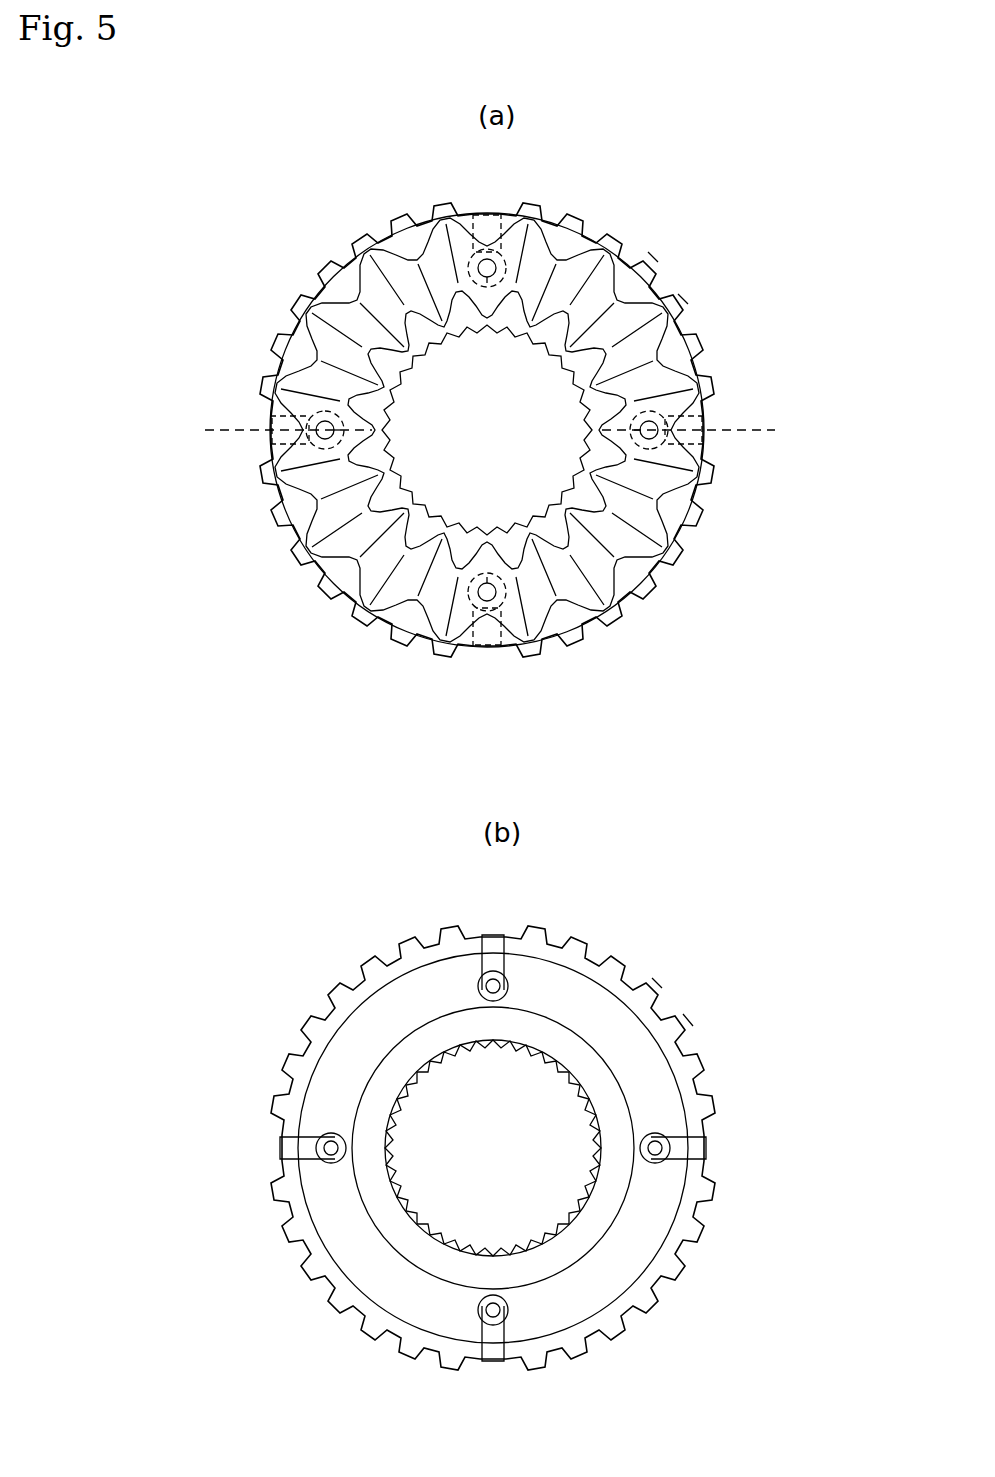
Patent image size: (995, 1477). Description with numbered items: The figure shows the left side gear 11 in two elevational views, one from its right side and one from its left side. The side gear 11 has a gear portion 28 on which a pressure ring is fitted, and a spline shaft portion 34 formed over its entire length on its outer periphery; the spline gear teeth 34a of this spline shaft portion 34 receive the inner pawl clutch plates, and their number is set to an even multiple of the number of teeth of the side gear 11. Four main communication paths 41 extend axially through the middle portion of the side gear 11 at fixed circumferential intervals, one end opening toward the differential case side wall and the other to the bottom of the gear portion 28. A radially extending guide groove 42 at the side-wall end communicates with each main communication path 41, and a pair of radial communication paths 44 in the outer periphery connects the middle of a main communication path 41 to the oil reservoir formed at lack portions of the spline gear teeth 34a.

In FIG. 5A, the side gear 11 is at (272, 236).
In FIG. 5B, the side gear 11 is at (283, 965).
In FIG. 5A, the gear portion 28 is at (340, 538).
In FIG. 5A, the spline shaft portion 34 is at (717, 340).
In FIG. 5B, the spline shaft portion 34 is at (642, 948).
In FIG. 5A, the spline gear teeth 34a is at (653, 257).
In FIG. 5B, the spline gear teeth 34a is at (657, 983).
In FIG. 5A, the main communication path 41 is at (377, 412).
In FIG. 5B, the main communication path 41 is at (331, 1147).
In FIG. 5B, the guide groove 42 is at (273, 1145).
In FIG. 5A, the radial communication path 44 is at (490, 430).